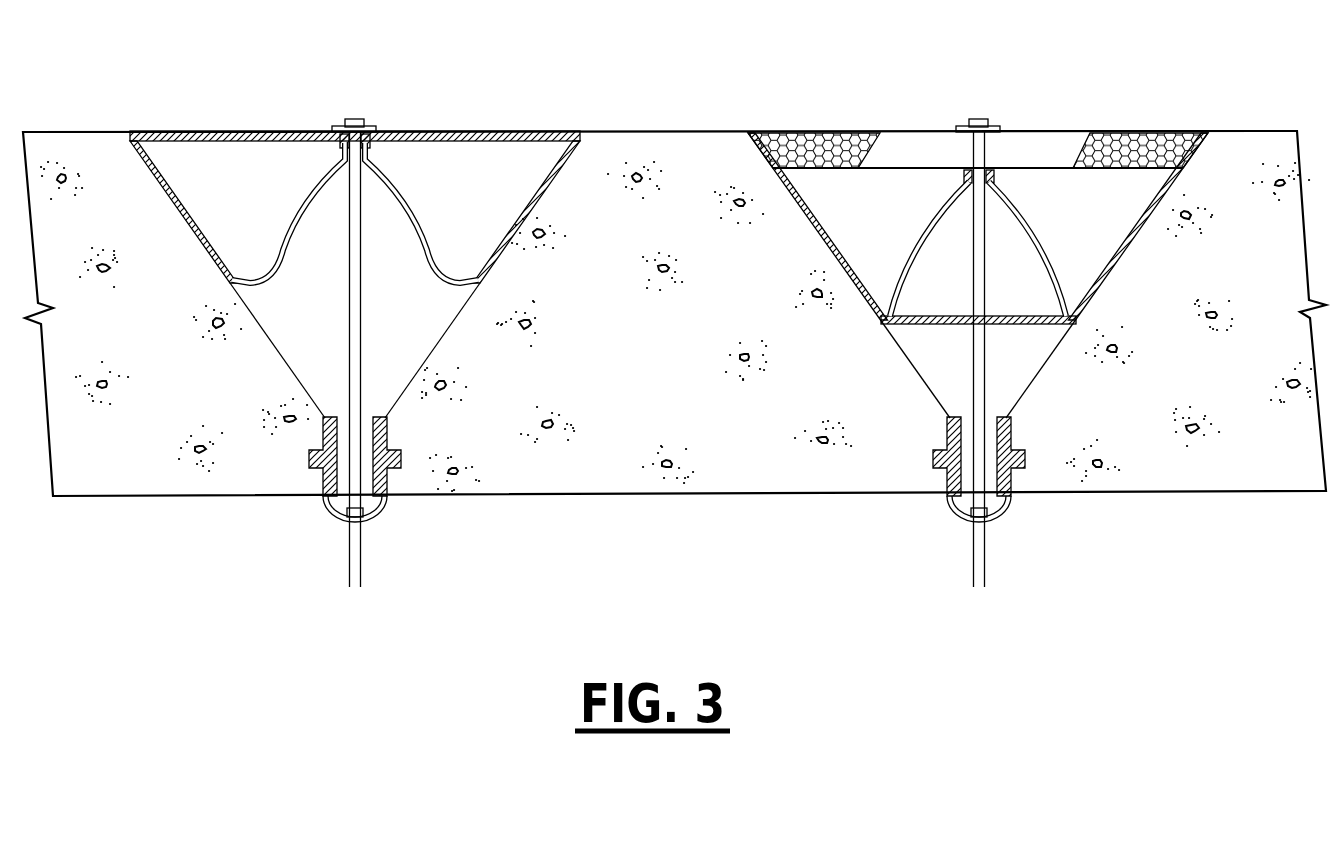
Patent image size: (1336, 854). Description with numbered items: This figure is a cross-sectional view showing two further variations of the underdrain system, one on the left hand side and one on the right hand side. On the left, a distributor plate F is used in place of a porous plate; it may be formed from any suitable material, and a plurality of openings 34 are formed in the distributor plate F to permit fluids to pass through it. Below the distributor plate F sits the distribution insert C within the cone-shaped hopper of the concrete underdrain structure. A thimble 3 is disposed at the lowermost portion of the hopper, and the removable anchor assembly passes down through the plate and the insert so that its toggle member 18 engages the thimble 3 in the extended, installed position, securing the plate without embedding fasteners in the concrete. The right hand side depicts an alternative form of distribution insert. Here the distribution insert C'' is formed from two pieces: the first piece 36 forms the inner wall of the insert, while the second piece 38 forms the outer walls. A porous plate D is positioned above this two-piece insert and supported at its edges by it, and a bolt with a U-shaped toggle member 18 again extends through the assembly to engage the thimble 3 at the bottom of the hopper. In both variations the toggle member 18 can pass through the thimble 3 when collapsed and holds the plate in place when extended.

The thimble 3 is at (322, 481).
The toggle member 18 is at (373, 510).
The openings 34 is at (300, 131).
The first piece 36 is at (1030, 231).
The second piece 38 is at (830, 246).
The distribution insert C is at (355, 168).
The distribution insert C'' is at (988, 185).
The distributor plate F is at (480, 131).
The porous plate D is at (1113, 130).